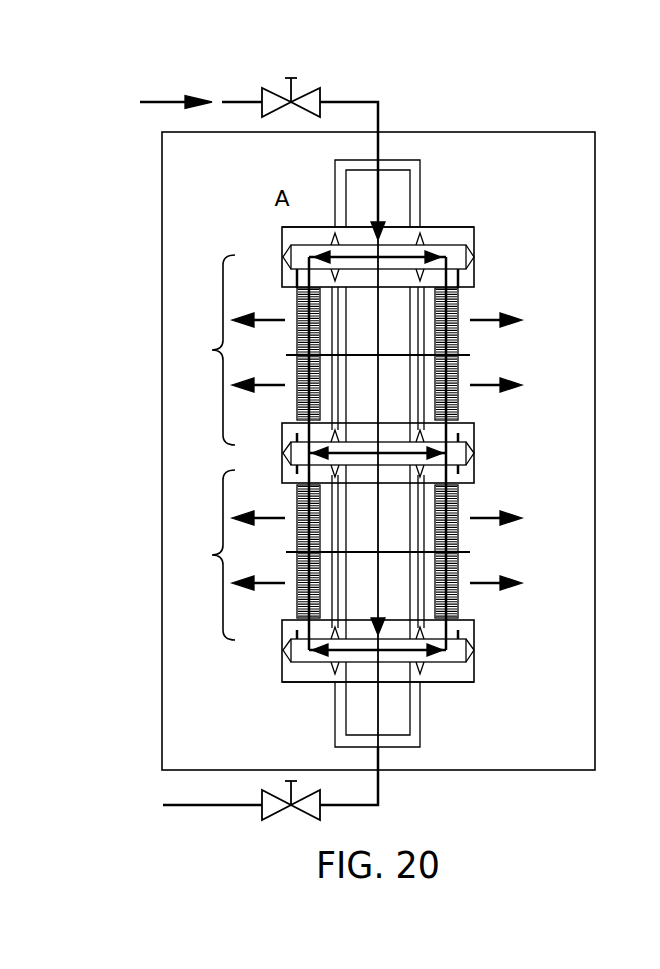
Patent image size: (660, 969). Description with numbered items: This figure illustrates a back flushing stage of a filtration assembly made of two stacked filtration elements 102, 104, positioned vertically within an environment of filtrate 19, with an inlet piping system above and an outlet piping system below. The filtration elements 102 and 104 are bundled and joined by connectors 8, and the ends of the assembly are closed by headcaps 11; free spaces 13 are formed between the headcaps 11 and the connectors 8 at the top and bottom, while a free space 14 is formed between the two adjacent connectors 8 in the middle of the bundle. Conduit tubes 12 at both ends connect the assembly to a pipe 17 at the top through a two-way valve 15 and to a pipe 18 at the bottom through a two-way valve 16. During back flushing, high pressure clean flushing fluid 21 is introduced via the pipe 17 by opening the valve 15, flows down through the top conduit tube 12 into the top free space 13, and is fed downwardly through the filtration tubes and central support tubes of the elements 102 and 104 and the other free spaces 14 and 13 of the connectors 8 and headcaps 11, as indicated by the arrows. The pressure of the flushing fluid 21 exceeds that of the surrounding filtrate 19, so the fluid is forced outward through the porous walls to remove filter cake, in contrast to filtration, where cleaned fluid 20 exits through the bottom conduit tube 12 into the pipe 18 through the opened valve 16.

The connector 8 is at (470, 281).
The headcap 11 is at (451, 226).
The conduit tube 12 is at (396, 160).
The free space 13 is at (456, 252).
The free space 14 is at (474, 453).
The two-way valve 15 is at (263, 96).
The two-way valve 16 is at (299, 812).
The pipe 17 is at (349, 104).
The pipe 18 is at (268, 776).
The filtrate 19 is at (545, 425).
The cleaned fluid 20 is at (392, 697).
The flushing fluid 21 is at (172, 92).
The filtration element 102 is at (349, 350).
The filtration element 104 is at (349, 555).